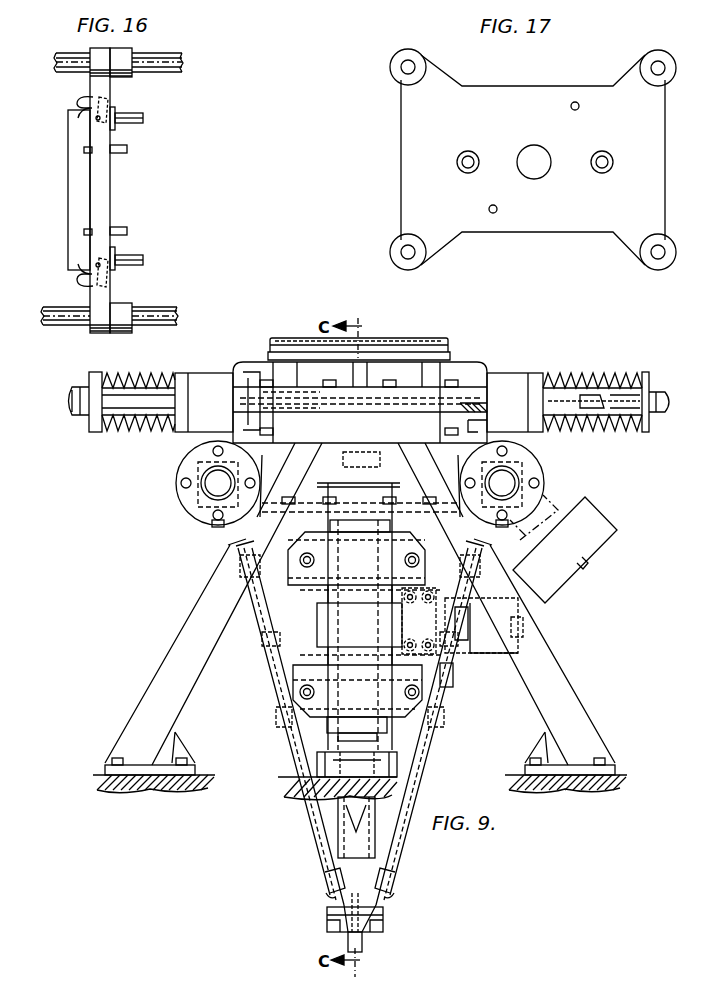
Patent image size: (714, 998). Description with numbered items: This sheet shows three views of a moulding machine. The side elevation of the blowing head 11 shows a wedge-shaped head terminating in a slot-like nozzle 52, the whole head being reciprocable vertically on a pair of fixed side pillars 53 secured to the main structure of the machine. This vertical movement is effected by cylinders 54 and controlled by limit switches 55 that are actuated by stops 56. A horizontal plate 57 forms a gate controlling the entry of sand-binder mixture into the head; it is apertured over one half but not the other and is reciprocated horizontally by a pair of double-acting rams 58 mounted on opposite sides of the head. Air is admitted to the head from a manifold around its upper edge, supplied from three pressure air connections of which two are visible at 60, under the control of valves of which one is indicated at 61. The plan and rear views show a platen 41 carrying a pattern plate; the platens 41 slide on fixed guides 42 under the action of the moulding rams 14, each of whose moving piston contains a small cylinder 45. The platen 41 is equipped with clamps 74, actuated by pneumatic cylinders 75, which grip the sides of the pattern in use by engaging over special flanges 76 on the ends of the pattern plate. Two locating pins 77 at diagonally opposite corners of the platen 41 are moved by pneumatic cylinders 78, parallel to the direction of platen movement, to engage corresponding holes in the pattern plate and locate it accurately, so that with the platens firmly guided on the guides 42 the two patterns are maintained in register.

In FIG. 9, the blowing head 11 is at (292, 642).
In FIG. 17, the moulding rams 14 is at (540, 93).
In FIG. 16, the platens 41 is at (102, 182).
In FIG. 16, the fixed guides 42 is at (163, 60).
In FIG. 16, the small cylinder 45 is at (164, 314).
In FIG. 9, the slot-like nozzle 52 is at (362, 937).
In FIG. 9, the fixed side pillars 53 is at (352, 500).
In FIG. 9, the cylinders 54 is at (366, 635).
In FIG. 9, the limit switches 55 is at (480, 640).
In FIG. 9, the stops 56 is at (445, 618).
In FIG. 9, the horizontal plate 57 is at (518, 405).
In FIG. 9, the double-acting rams 58 is at (218, 401).
In FIG. 9, the pressure air connections 60 is at (228, 492).
In FIG. 9, the valves 61 is at (570, 565).
In FIG. 16, the clamps 74 is at (80, 98).
In FIG. 16, the pneumatic cylinders 75 is at (140, 117).
In FIG. 17, the pneumatic cylinders 75 is at (466, 152).
In FIG. 16, the special flanges 76 is at (74, 116).
In FIG. 16, the locating pins 77 is at (84, 150).
In FIG. 16, the pneumatic cylinders 78 is at (128, 153).
In FIG. 17, the pneumatic cylinders 78 is at (576, 111).